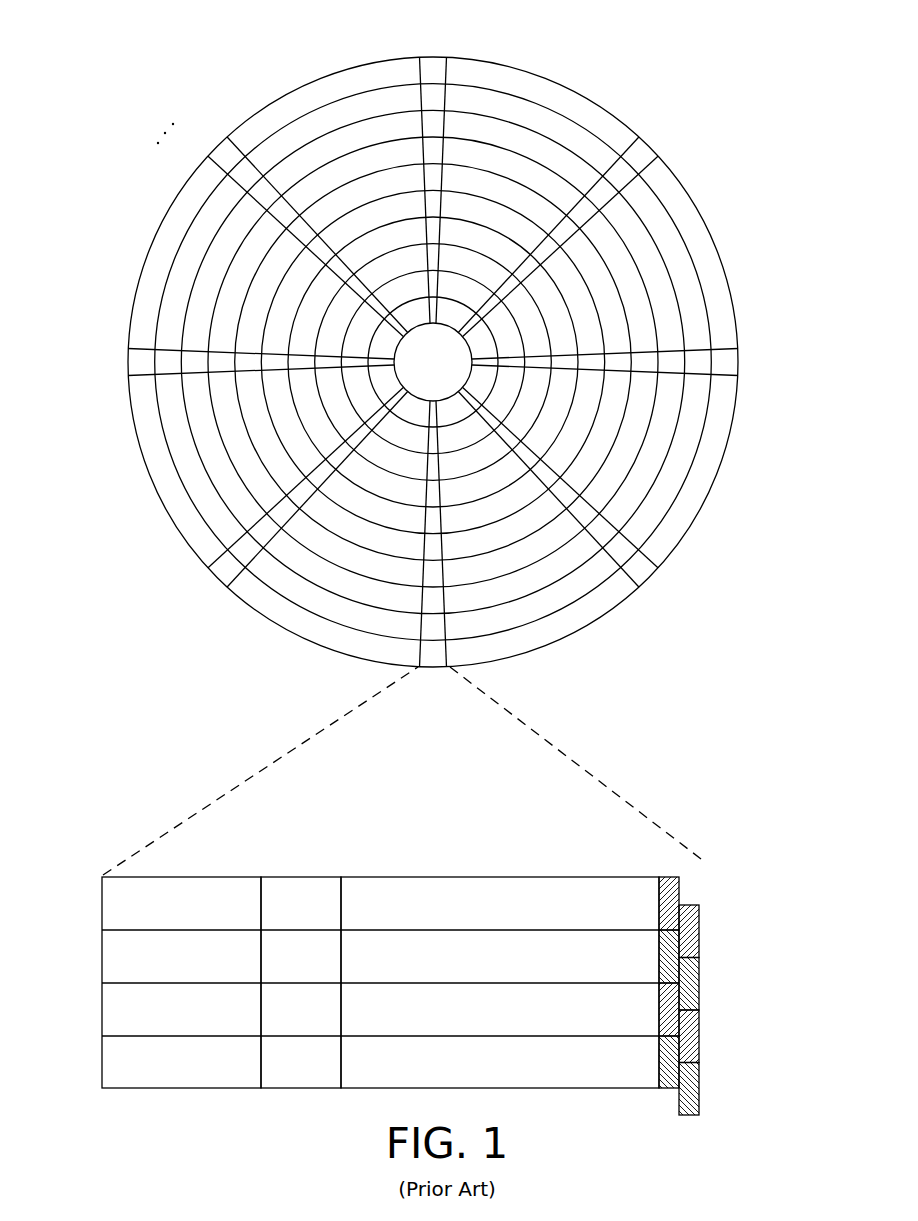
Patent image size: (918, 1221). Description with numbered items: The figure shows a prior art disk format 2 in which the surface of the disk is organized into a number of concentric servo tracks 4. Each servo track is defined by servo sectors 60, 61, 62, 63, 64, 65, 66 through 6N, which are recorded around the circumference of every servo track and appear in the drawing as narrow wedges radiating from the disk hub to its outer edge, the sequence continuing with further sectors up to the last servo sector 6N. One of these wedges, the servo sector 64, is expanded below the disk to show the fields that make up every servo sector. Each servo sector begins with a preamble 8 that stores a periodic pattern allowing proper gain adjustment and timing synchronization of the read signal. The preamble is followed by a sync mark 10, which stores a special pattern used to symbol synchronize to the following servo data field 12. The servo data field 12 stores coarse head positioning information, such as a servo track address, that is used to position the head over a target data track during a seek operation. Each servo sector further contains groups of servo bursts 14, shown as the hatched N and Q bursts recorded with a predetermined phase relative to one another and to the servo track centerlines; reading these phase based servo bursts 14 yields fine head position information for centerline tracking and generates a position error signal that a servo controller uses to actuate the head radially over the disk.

The disk format 2 is at (211, 61).
The servo tracks 4 is at (537, 117).
The servo sector 60 is at (437, 66).
The servo sector 61 is at (642, 153).
The servo sector 62 is at (730, 363).
The servo sector 63 is at (642, 572).
The servo sector 64 is at (301, 737).
The servo sector 65 is at (225, 572).
The servo sector 66 is at (135, 361).
The servo sector 6N is at (226, 152).
The preamble 8 is at (190, 877).
The sync mark 10 is at (303, 877).
The servo data field 12 is at (490, 877).
The servo bursts 14 is at (697, 875).